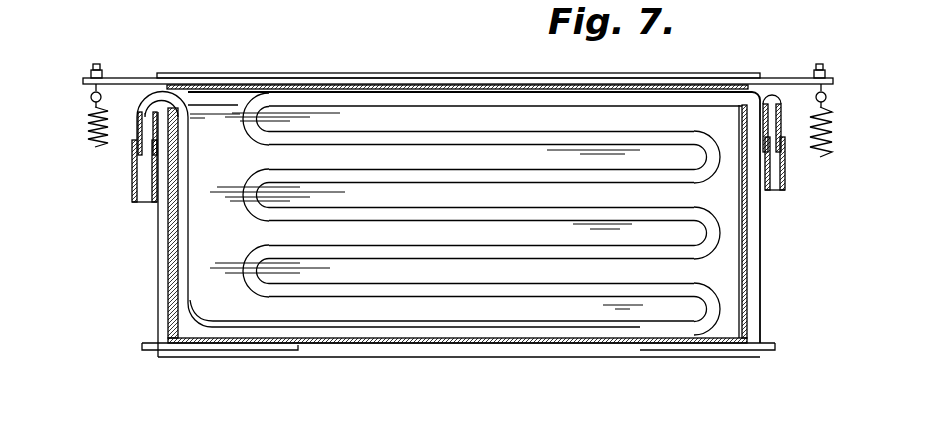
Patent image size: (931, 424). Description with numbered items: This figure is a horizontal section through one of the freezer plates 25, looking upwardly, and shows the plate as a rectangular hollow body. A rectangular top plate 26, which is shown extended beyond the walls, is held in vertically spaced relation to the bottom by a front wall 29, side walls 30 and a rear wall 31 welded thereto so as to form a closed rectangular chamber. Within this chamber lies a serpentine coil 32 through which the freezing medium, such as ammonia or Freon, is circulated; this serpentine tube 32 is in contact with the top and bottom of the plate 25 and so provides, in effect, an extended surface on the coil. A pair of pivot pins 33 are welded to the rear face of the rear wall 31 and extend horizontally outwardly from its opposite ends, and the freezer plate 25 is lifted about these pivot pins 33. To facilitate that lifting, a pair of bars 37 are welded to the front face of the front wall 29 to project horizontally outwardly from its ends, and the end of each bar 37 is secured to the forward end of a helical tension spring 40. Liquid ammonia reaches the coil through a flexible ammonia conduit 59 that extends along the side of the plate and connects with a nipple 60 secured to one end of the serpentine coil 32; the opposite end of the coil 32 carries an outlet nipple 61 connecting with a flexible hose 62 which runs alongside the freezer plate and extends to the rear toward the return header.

The freezer plate 25 is at (455, 220).
The top plate 26 is at (476, 214).
The front wall 29 is at (436, 74).
The side walls 30 is at (168, 289).
The rear wall 31 is at (362, 343).
The serpentine coil 32 is at (592, 300).
The pivot pins 33 is at (150, 347).
The bars 37 is at (132, 79).
The helical tension spring 40 is at (830, 102).
The flexible ammonia conduit 59 is at (783, 189).
The nipple 60 is at (785, 132).
The outlet nipple 61 is at (133, 128).
The flexible hose 62 is at (134, 198).